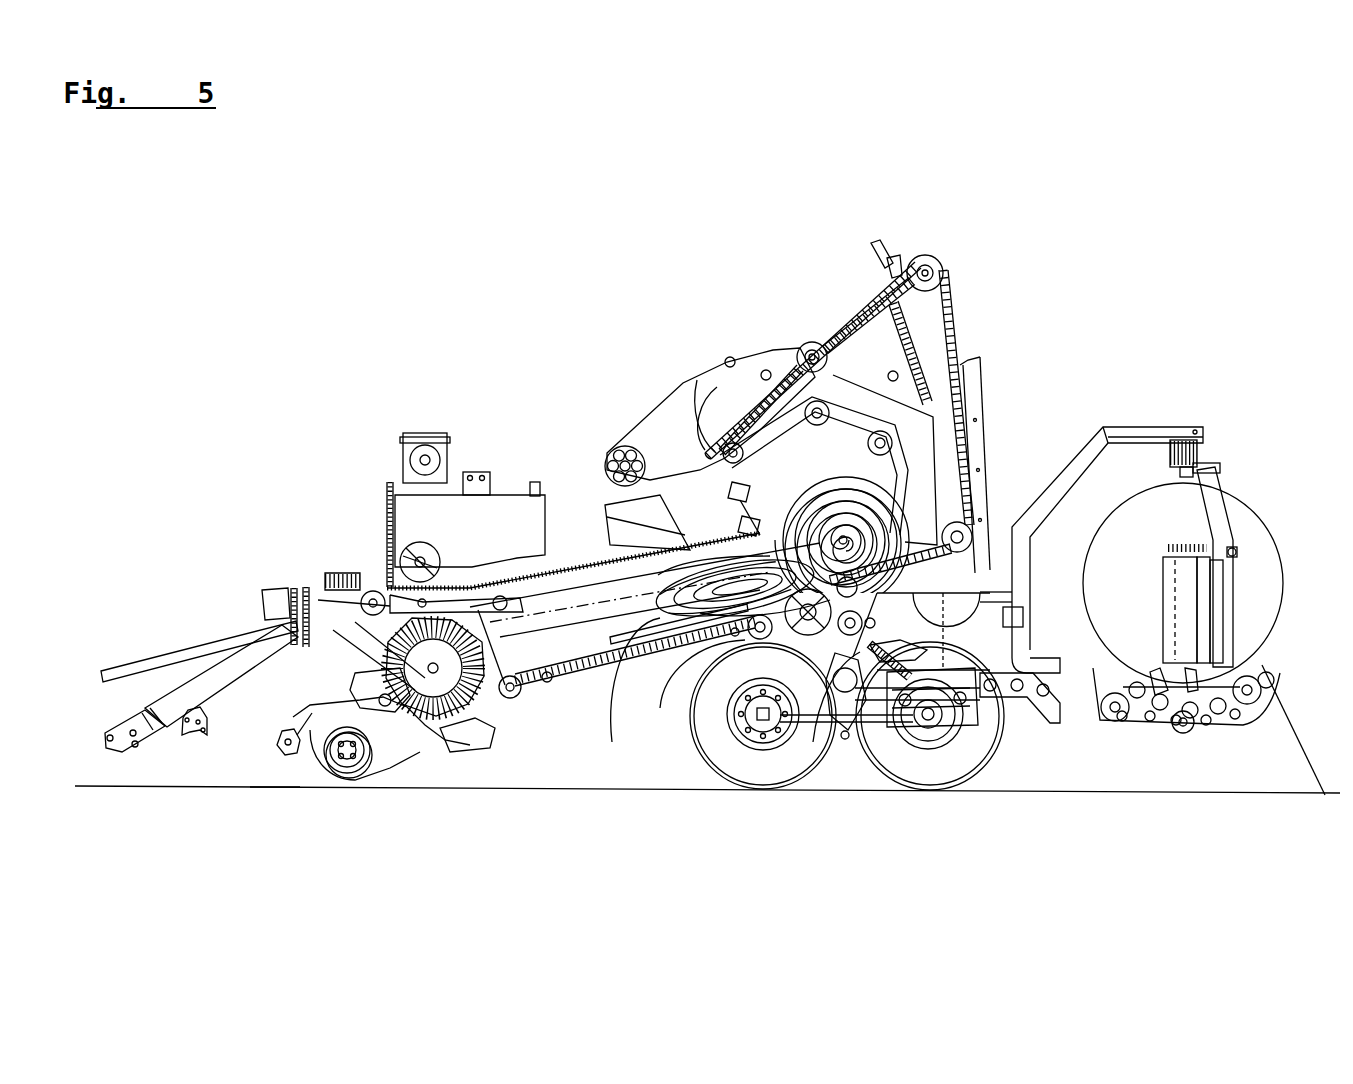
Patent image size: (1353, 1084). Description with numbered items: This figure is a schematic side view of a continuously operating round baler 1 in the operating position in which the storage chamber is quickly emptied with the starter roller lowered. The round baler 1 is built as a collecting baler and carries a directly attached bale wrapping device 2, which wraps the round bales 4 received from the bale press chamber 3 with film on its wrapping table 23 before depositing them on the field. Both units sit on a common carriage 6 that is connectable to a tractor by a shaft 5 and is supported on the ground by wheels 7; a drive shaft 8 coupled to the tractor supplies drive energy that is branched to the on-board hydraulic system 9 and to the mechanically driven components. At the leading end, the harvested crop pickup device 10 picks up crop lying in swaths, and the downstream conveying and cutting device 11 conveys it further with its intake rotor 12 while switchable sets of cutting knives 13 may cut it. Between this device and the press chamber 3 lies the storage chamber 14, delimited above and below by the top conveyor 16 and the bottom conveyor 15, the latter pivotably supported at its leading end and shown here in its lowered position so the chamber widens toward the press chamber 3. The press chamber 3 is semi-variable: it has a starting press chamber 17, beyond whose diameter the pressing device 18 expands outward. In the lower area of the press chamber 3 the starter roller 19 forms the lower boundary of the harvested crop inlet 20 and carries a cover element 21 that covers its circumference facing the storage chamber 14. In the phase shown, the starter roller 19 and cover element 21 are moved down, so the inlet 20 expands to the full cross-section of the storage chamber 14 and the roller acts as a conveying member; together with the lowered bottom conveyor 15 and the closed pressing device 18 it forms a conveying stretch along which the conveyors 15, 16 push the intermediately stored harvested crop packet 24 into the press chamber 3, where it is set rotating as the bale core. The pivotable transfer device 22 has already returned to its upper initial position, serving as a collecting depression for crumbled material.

The round baler 1 is at (520, 232).
The bale wrapping device 2 is at (1214, 366).
The bale press chamber 3 is at (755, 310).
The round bale 4 is at (1250, 542).
The shaft 5 is at (139, 770).
The common carriage 6 is at (1018, 754).
The wheels 7 is at (752, 770).
The drive shaft 8 is at (157, 662).
The on-board hydraulic system 9 is at (372, 383).
The harvested crop pickup device 10 is at (293, 800).
The conveying and cutting device 11 is at (436, 764).
The intake rotor 12 is at (425, 670).
The cutting knives 13 is at (480, 752).
The storage chamber 14 is at (572, 520).
The bottom conveyor 15 is at (567, 690).
The top conveyor 16 is at (613, 562).
The starting press chamber 17 is at (853, 478).
The pressing device 18 is at (972, 268).
The starter roller 19 is at (693, 677).
The harvested crop inlet 20 is at (787, 520).
The cover element 21 is at (793, 655).
The transfer device 22 is at (993, 590).
The wrapping table 23 is at (1224, 762).
The harvested crop packet 24 is at (628, 665).